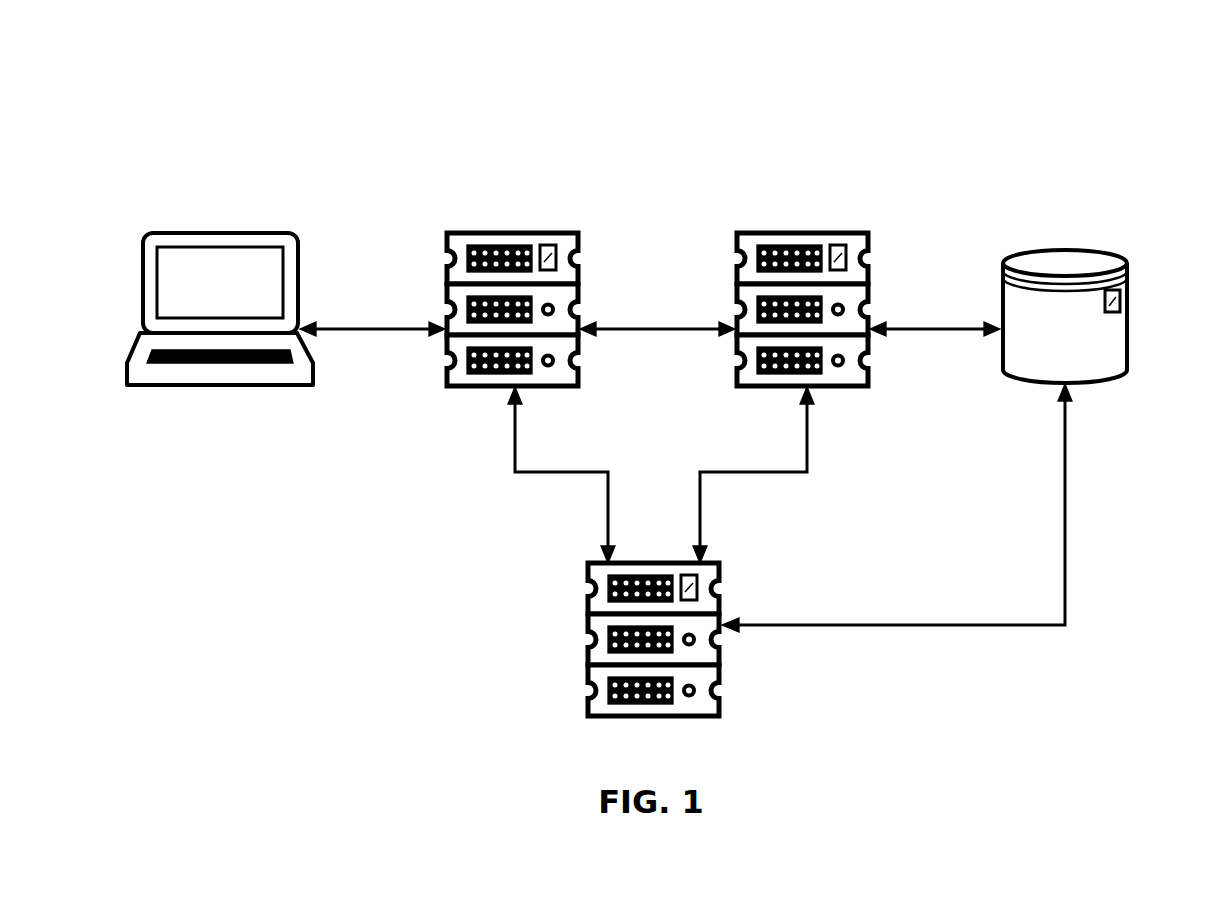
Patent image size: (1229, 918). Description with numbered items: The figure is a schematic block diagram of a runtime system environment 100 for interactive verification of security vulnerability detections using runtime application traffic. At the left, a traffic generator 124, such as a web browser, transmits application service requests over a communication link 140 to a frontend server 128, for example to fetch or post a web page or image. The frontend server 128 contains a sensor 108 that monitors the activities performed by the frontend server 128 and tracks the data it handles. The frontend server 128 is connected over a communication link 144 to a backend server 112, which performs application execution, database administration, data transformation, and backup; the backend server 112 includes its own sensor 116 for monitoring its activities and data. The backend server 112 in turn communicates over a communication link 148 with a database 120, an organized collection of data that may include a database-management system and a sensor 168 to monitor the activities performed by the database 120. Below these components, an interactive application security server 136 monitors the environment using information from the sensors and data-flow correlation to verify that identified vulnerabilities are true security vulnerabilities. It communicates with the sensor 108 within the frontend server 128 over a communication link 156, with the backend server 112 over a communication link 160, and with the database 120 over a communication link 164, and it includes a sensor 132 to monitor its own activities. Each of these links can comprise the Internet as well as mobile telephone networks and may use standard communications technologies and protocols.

The runtime system environment 100 is at (372, 148).
The sensor 108 is at (547, 245).
The backend server 112 is at (736, 372).
The sensor 116 is at (835, 245).
The database 120 is at (1065, 316).
The traffic generator 124 is at (167, 387).
The frontend server 128 is at (452, 388).
The sensor 132 is at (700, 584).
The interactive application security server 136 is at (586, 674).
The communication link 140 is at (370, 327).
The communication link 144 is at (651, 327).
The communication link 148 is at (917, 327).
The communication link 156 is at (545, 474).
The communication link 160 is at (807, 460).
The communication link 164 is at (941, 622).
The sensor 168 is at (1120, 295).